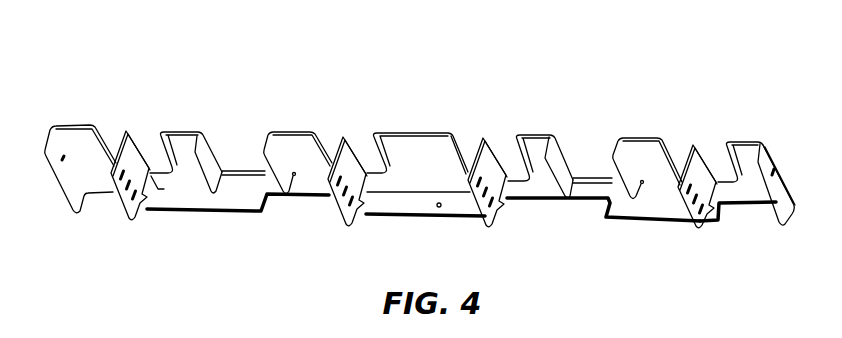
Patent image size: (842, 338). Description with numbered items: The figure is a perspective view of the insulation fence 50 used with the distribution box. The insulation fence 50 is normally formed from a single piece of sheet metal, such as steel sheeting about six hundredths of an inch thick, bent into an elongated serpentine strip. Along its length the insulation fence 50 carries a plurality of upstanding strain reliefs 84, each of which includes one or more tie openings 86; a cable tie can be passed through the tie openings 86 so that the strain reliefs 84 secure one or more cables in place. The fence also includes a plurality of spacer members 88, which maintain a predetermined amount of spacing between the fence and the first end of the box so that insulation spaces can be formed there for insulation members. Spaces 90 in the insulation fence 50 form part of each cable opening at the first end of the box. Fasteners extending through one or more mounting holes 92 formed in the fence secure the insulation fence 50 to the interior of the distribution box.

The insulation fence 50 is at (680, 62).
The strain relief 84 is at (116, 207).
The tie opening 86 is at (357, 193).
The spacer member 88 is at (212, 160).
The space 90 is at (711, 150).
The mounting hole 92 is at (443, 206).